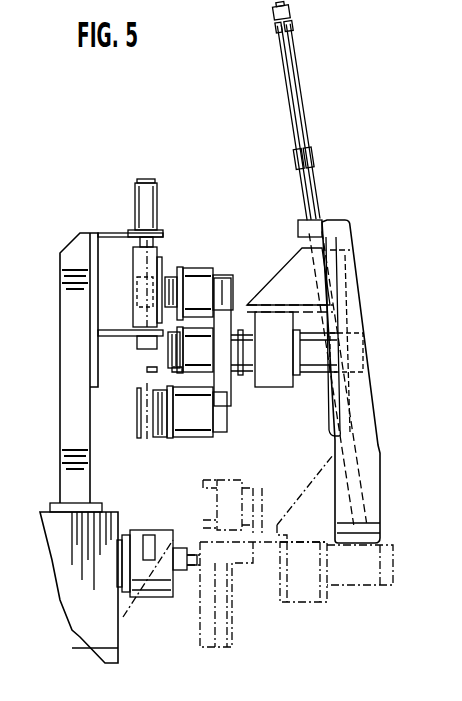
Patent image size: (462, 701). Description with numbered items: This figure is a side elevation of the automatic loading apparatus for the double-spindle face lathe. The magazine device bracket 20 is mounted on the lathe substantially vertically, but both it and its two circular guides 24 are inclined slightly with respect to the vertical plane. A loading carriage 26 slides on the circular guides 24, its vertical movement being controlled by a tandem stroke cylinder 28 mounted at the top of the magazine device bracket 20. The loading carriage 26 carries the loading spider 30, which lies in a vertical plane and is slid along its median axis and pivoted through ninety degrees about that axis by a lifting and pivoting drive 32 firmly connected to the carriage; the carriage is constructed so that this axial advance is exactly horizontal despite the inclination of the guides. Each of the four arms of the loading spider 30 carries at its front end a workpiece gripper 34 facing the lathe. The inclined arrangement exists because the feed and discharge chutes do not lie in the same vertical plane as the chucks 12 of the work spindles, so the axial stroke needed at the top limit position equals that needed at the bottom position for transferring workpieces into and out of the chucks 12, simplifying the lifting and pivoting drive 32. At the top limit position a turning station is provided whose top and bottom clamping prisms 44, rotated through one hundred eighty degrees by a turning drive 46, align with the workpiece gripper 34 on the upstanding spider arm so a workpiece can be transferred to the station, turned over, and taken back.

The chuck 12 is at (163, 583).
The magazine device bracket 20 is at (360, 398).
The circular guides 24 is at (340, 413).
The loading carriage 26 is at (285, 277).
The tandem stroke cylinder 28 is at (303, 117).
The loading spider 30 is at (220, 277).
The lifting and pivoting drive 32 is at (308, 348).
The workpiece gripper 34 is at (157, 340).
The clamping prism 44 is at (140, 255).
The turning drive 46 is at (138, 202).